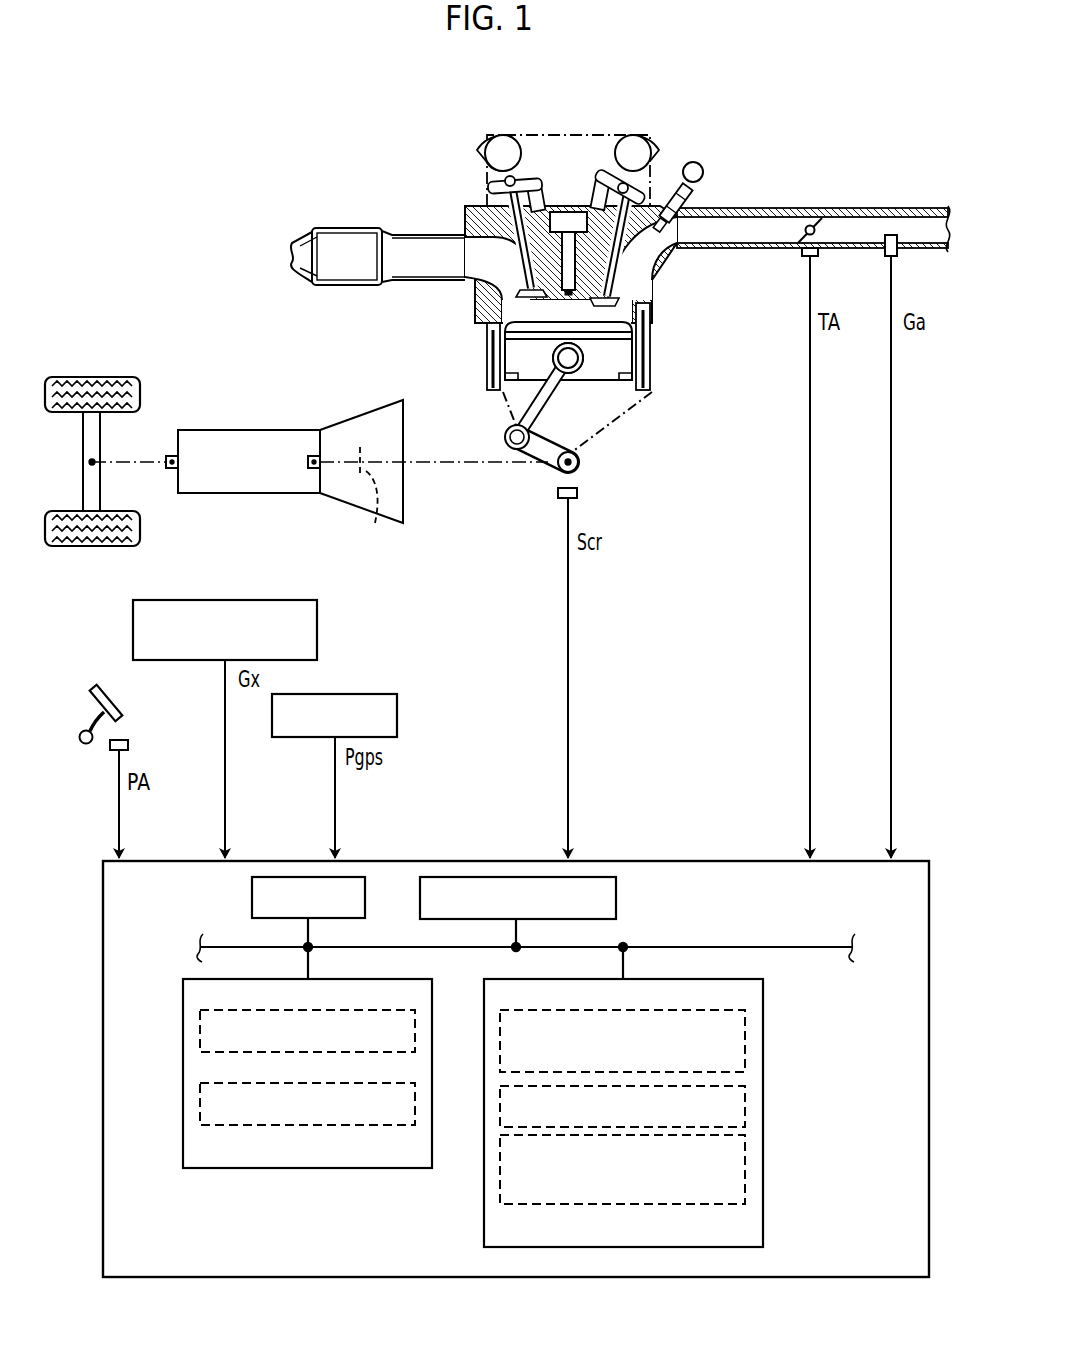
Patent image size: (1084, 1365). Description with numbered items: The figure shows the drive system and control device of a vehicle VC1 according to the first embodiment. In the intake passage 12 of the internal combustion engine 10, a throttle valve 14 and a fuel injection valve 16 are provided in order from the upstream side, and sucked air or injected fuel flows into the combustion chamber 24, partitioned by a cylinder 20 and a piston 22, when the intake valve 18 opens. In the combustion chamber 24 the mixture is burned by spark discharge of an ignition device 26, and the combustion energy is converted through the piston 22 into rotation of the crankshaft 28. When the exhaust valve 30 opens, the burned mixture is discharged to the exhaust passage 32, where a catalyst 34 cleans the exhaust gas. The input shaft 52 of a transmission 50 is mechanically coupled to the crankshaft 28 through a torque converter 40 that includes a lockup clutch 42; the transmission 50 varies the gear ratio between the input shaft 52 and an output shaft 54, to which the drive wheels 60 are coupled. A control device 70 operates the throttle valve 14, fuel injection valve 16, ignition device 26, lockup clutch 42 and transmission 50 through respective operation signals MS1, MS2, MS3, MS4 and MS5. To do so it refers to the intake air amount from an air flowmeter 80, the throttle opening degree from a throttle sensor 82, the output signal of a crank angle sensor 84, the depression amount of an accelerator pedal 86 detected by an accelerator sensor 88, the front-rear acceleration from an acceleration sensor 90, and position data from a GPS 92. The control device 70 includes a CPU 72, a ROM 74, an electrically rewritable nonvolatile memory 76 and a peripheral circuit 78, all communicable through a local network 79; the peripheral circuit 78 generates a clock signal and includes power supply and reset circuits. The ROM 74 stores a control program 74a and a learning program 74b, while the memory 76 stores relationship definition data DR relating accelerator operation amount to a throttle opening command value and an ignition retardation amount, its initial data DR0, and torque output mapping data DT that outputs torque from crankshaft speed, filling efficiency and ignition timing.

The internal combustion engine 10 is at (722, 120).
The intake passage 12 is at (940, 240).
The throttle valve 14 is at (822, 231).
The fuel injection valve 16 is at (692, 215).
The intake valve 18 is at (650, 292).
The cylinder 20 is at (645, 315).
The piston 22 is at (620, 362).
The combustion chamber 24 is at (520, 315).
The ignition device 26 is at (556, 212).
The crankshaft 28 is at (570, 453).
The exhaust valve 30 is at (520, 267).
The exhaust passage 32 is at (427, 246).
The catalyst 34 is at (340, 232).
The torque converter 40 is at (348, 418).
The lockup clutch 42 is at (375, 501).
The transmission 50 is at (244, 430).
The input shaft 52 is at (307, 461).
The output shaft 54 is at (167, 458).
The drive wheels 60 is at (113, 377).
The control device 70 is at (683, 859).
The CPU 72 is at (251, 897).
The ROM 74 is at (357, 979).
The control program 74a is at (352, 1010).
The learning program 74b is at (352, 1083).
The memory 76 is at (698, 979).
The peripheral circuit 78 is at (617, 899).
The local network 79 is at (787, 946).
The air flowmeter 80 is at (898, 256).
The throttle sensor 82 is at (822, 255).
The crank angle sensor 84 is at (578, 492).
The accelerator pedal 86 is at (90, 688).
The accelerator sensor 88 is at (128, 745).
The acceleration sensor 90 is at (277, 601).
The GPS 92 is at (358, 693).
The operation signal MS1 is at (807, 226).
The operation signal MS2 is at (707, 168).
The operation signal MS3 is at (573, 208).
The operation signal MS4 is at (367, 456).
The operation signal MS5 is at (248, 500).
The vehicle VC1 is at (906, 519).
The relationship definition data DR is at (745, 1039).
The initial data DR0 is at (745, 1104).
The torque output mapping data DT is at (745, 1173).